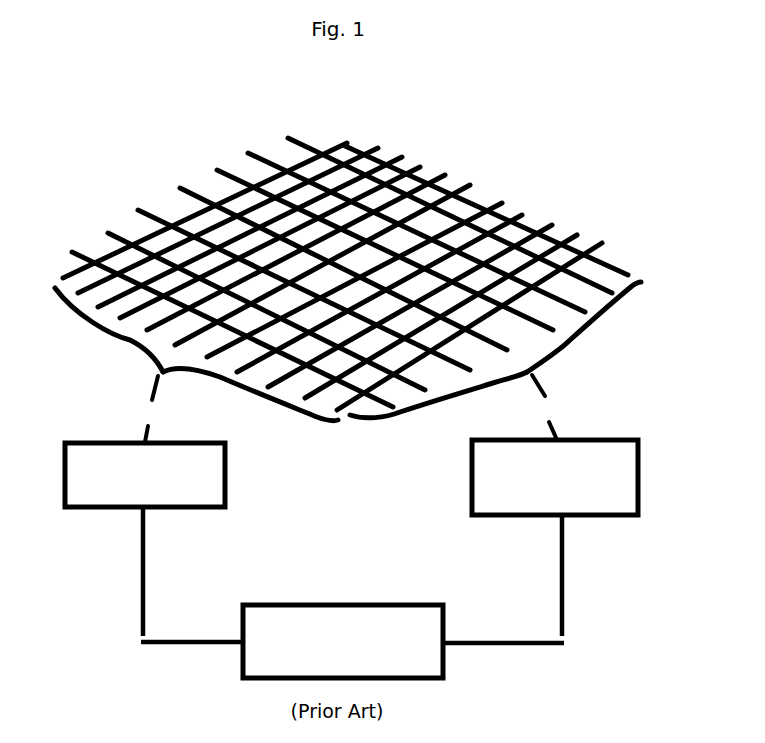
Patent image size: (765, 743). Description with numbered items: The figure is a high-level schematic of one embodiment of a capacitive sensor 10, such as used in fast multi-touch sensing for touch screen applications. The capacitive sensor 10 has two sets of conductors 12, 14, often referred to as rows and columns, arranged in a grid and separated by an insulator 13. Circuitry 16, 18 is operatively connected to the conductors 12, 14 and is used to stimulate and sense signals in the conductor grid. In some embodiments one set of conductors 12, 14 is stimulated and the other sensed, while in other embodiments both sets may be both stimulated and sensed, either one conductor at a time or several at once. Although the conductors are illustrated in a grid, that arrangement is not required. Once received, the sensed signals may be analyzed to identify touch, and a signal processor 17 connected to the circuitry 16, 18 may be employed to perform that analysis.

The capacitive sensor 10 is at (134, 165).
The conductor 12 is at (150, 409).
The insulator 13 is at (457, 208).
The conductor 14 is at (544, 407).
The circuitry 16 is at (145, 475).
The signal processor 17 is at (343, 641).
The circuitry 18 is at (555, 477).